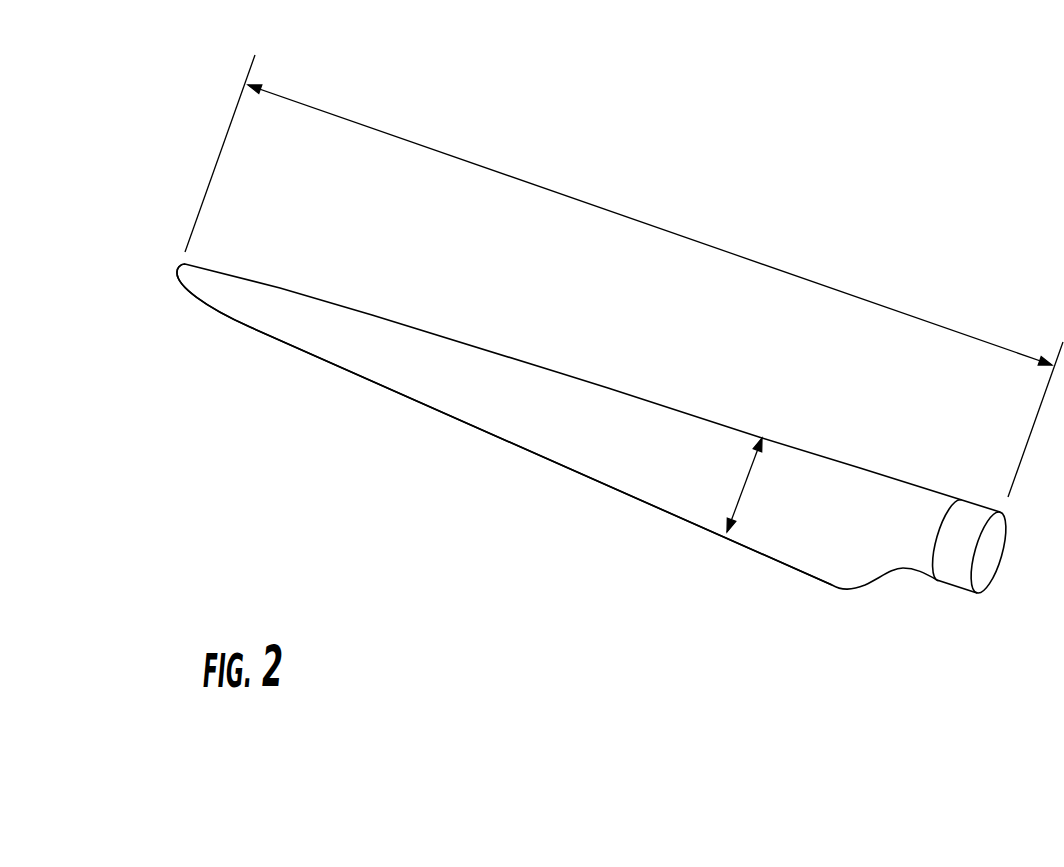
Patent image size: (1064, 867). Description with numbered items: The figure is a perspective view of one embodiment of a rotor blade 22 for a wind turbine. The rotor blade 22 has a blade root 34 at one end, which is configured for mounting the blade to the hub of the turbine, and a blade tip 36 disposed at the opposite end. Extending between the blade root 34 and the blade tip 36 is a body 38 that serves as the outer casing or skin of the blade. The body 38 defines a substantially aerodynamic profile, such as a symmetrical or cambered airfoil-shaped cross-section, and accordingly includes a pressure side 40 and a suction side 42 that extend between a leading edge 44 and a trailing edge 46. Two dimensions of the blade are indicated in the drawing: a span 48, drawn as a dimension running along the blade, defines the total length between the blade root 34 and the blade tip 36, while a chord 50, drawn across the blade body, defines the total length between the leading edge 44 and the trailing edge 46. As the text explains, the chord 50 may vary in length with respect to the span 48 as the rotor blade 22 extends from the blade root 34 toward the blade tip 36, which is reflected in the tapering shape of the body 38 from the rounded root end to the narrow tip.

The rotor blade 22 is at (907, 245).
The blade root 34 is at (955, 587).
The blade tip 36 is at (180, 267).
The body 38 is at (608, 420).
The pressure side 40 is at (670, 472).
The suction side 42 is at (452, 395).
The leading edge 44 is at (372, 315).
The trailing edge 46 is at (342, 372).
The span 48 is at (630, 217).
The chord 50 is at (745, 483).